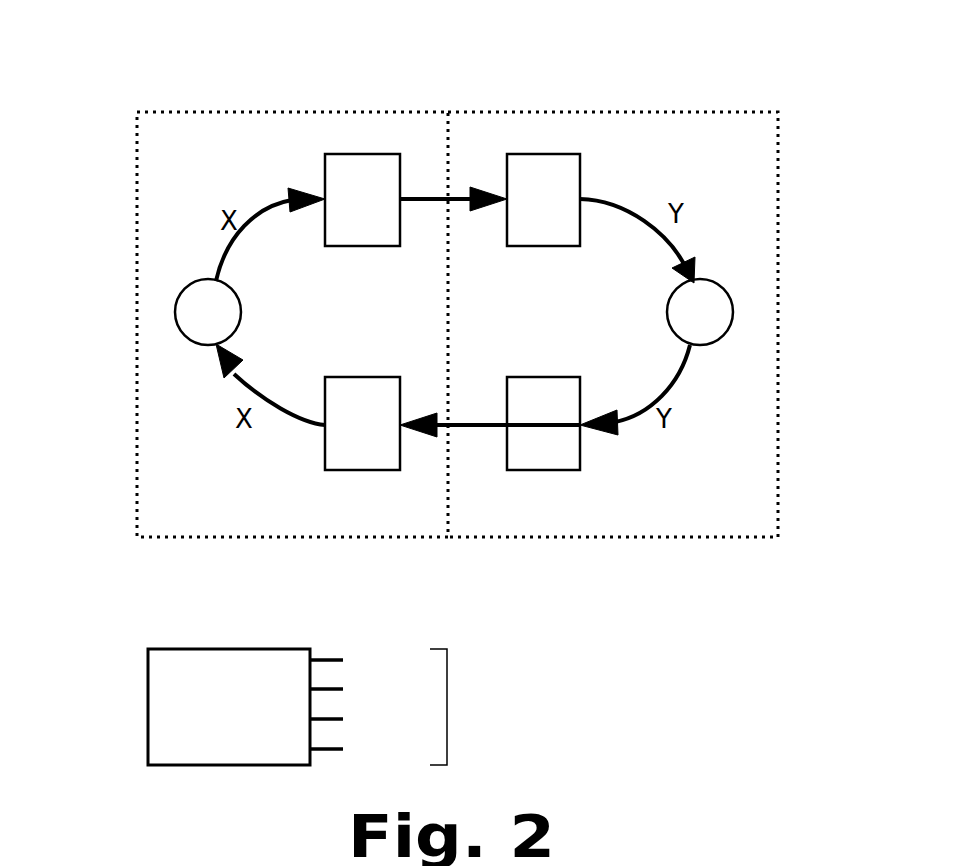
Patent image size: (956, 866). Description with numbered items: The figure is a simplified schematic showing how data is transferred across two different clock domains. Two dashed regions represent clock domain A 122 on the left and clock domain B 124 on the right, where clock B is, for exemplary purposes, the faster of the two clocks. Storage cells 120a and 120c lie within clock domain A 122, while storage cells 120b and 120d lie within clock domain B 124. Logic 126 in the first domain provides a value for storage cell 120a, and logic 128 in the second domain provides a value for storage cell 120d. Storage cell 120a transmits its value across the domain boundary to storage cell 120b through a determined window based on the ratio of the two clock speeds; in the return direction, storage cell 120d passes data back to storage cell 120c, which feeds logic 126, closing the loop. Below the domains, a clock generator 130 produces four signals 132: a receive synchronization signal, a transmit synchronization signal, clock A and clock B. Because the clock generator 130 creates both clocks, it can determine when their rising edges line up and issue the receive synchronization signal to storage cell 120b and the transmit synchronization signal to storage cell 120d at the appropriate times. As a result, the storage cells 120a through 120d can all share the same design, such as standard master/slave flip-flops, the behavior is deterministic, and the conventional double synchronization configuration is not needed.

The storage cell 120a is at (348, 154).
The storage cell 120b is at (542, 154).
The storage cell 120c is at (344, 470).
The storage cell 120d is at (565, 470).
The clock domain A 122 is at (298, 112).
The clock domain B 124 is at (597, 112).
The logic 126 is at (175, 306).
The logic 128 is at (733, 308).
The clock generator 130 is at (212, 649).
The four signals 132 is at (447, 705).